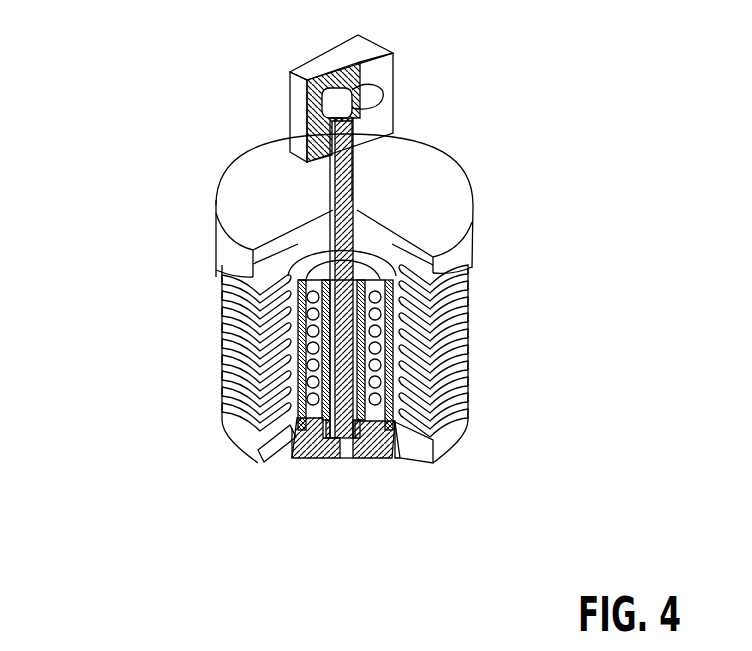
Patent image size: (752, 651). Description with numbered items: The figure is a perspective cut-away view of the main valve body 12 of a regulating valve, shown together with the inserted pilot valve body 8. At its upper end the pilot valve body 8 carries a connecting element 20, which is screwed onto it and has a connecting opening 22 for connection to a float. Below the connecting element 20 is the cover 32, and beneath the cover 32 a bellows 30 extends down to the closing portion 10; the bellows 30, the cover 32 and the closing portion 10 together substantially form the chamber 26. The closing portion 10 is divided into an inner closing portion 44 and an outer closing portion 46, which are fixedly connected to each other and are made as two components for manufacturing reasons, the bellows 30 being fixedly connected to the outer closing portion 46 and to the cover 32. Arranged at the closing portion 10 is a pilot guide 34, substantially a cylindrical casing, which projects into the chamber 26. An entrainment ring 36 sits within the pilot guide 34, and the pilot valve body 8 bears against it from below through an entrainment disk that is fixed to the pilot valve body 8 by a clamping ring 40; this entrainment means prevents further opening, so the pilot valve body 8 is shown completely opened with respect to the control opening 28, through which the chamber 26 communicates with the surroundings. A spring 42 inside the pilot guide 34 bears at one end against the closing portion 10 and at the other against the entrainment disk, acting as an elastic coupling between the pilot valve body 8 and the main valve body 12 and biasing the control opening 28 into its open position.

The pilot valve body 8 is at (358, 183).
The closing portion 10 is at (290, 460).
The main valve body 12 is at (568, 255).
The connecting element 20 is at (373, 47).
The connecting opening 22 is at (378, 98).
The chamber 26 is at (305, 347).
The control opening 28 is at (347, 452).
The bellows 30 is at (468, 313).
The cover 32 is at (457, 193).
The pilot guide 34 is at (415, 368).
The entrainment ring 36 is at (245, 273).
The clamping ring 40 is at (303, 220).
The spring 42 is at (305, 387).
The inner closing portion 44 is at (317, 460).
The outer closing portion 46 is at (447, 433).